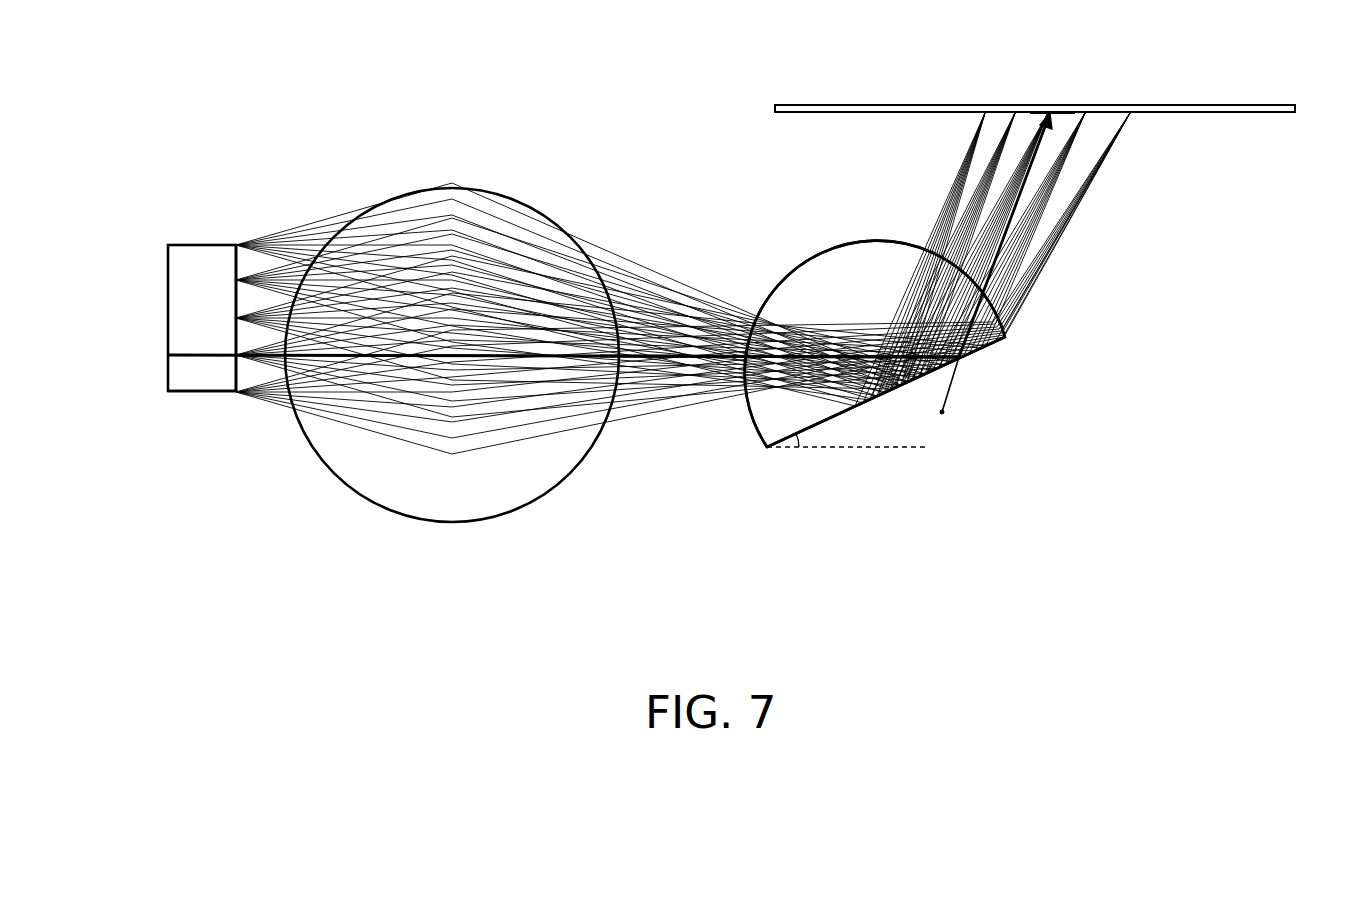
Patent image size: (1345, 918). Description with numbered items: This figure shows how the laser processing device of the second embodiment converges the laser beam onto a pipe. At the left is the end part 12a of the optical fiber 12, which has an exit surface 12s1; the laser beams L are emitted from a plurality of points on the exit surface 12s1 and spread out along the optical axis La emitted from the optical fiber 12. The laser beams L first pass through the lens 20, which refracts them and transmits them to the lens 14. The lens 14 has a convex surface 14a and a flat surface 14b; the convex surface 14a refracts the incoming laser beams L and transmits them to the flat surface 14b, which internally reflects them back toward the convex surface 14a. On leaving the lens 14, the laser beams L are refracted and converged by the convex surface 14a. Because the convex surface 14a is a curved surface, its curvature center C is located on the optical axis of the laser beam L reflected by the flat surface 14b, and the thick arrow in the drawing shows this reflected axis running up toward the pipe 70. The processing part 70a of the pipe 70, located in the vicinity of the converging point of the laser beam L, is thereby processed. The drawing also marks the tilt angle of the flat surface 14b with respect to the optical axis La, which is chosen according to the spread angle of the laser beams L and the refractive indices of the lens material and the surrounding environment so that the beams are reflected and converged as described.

The optical fiber 12 is at (187, 273).
The end part 12a is at (188, 395).
The exit surface 12s1 is at (248, 370).
The optical axis La is at (198, 353).
The laser beam L is at (307, 230).
The lens 20 is at (452, 523).
The lens 14 is at (768, 440).
The convex surface 14a is at (858, 282).
The flat surface 14b is at (976, 360).
The curvature center C is at (944, 414).
The pipe 70 is at (1297, 109).
The processing part 70a is at (1078, 106).